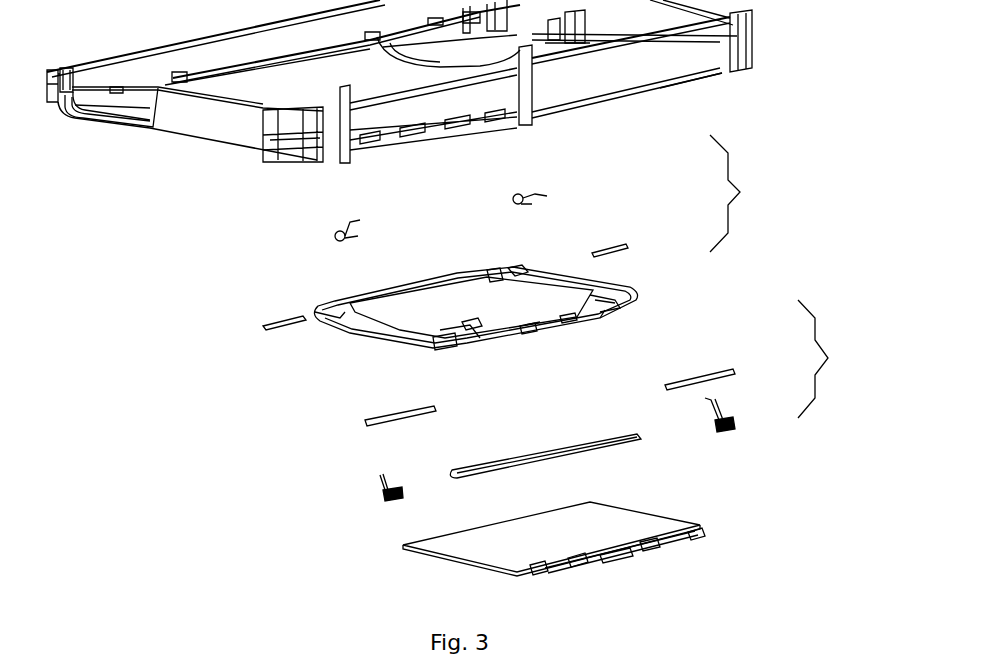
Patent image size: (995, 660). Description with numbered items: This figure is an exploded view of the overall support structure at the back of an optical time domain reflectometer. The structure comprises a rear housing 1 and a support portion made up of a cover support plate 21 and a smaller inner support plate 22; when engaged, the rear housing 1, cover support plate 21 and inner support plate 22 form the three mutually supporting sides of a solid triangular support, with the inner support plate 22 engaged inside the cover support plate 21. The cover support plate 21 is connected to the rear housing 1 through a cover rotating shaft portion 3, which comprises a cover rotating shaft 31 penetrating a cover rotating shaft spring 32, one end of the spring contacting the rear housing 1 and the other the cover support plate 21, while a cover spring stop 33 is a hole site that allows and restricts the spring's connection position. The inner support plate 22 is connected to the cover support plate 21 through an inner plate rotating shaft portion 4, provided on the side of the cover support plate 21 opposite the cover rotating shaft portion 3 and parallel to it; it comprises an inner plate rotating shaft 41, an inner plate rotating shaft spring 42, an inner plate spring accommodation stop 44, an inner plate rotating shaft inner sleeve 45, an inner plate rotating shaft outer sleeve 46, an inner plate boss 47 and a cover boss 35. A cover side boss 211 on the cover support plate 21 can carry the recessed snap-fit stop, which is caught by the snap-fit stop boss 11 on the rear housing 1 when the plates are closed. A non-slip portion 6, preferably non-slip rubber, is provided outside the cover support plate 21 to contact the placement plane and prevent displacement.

The rear housing 1 is at (588, 80).
The snap-fit stop boss 11 is at (440, 334).
The cover support plate 21 is at (527, 290).
The cover side boss 211 is at (430, 334).
The inner support plate 22 is at (518, 534).
The cover rotating shaft portion 3 is at (741, 193).
The cover rotating shaft 31 is at (284, 321).
The cover rotating shaft spring 32 is at (498, 192).
The cover spring stop 33 is at (517, 270).
The cover boss 35 is at (470, 322).
The inner plate rotating shaft portion 4 is at (829, 359).
The inner plate rotating shaft 41 is at (370, 423).
The inner plate rotating shaft spring 42 is at (385, 496).
The inner plate spring accommodation stop 44 is at (600, 306).
The inner plate rotating shaft inner sleeve 45 is at (562, 563).
The inner plate rotating shaft outer sleeve 46 is at (535, 328).
The inner plate boss 47 is at (660, 547).
The non-slip portion 6 is at (600, 440).